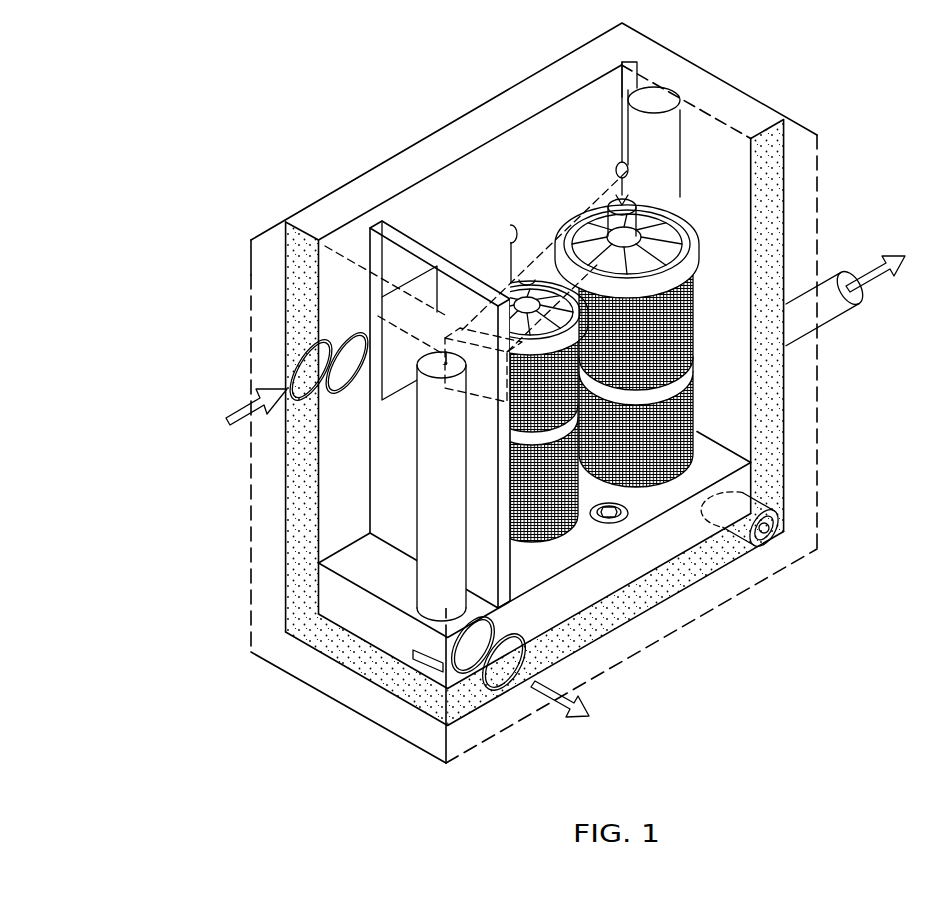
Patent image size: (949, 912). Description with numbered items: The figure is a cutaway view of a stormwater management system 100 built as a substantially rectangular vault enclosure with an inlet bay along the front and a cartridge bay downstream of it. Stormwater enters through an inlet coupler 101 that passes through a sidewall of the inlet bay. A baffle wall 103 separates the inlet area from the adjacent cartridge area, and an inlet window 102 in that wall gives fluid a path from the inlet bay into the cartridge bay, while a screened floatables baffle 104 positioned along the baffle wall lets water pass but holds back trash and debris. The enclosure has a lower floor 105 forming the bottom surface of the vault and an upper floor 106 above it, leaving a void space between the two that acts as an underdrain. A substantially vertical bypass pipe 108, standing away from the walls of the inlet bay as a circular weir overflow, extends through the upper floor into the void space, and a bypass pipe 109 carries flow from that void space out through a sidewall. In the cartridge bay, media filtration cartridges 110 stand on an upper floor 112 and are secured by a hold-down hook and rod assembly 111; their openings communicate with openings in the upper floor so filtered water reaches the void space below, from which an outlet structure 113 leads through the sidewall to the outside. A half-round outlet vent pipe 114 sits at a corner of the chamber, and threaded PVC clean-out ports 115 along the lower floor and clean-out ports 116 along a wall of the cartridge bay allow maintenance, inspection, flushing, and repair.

The stormwater management system 100 is at (172, 208).
The inlet coupler 101 is at (283, 347).
The inlet window 102 is at (460, 317).
The baffle wall 103 is at (377, 220).
The screened floatables baffle 104 is at (403, 288).
The lower floor 105 is at (483, 707).
The upper floor 106 is at (348, 652).
The bypass pipe 108 is at (415, 497).
The bypass pipe 109 is at (477, 677).
The media filtration cartridges 110 is at (700, 287).
The hold-down hook and rod assembly 111 is at (616, 158).
The upper floor 112 is at (627, 650).
The outlet structure 113 is at (817, 323).
The half-round outlet vent pipe 114 is at (650, 106).
The threaded PVC clean-out ports 115 is at (618, 525).
The threaded PVC clean-out ports 116 is at (772, 533).